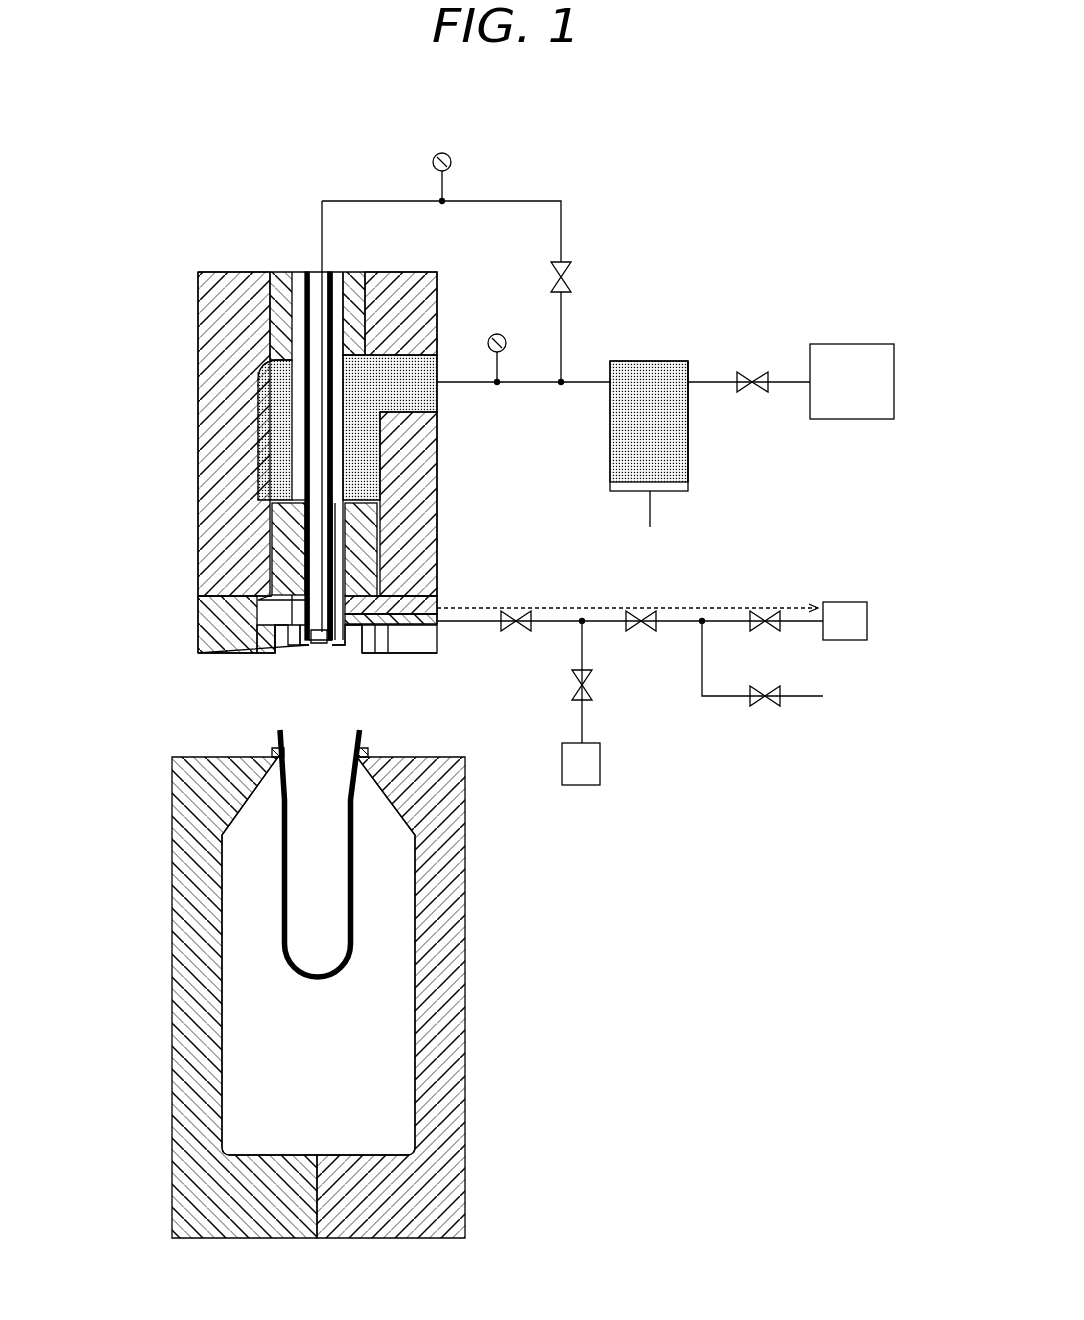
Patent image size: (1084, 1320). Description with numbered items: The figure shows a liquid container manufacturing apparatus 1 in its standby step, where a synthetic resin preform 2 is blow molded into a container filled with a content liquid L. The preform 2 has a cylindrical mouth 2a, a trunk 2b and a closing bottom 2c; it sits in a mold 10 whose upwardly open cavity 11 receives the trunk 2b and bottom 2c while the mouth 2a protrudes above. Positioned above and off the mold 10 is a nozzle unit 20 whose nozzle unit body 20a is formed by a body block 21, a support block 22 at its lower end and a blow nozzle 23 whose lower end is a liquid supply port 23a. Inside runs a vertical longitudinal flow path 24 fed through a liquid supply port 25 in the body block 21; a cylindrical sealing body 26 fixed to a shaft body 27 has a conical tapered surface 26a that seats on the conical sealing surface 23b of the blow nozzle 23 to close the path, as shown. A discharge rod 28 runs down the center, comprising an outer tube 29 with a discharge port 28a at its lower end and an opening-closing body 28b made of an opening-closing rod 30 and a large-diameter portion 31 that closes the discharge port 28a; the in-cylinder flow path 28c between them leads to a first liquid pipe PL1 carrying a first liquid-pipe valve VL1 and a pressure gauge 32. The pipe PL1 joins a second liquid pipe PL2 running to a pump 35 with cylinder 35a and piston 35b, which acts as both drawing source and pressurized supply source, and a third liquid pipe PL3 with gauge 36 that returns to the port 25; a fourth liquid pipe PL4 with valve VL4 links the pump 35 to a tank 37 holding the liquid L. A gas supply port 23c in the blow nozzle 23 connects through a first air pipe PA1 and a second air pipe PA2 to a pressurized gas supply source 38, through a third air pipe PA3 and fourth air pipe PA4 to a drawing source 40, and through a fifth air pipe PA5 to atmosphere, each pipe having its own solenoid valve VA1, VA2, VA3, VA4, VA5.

The liquid container manufacturing apparatus 1 is at (733, 210).
The preform 2 is at (357, 886).
The mouth 2a is at (360, 735).
The trunk 2b is at (357, 855).
The bottom 2c is at (316, 988).
The mold 10 is at (465, 934).
The cavity 11 is at (413, 1050).
The nozzle unit 20 is at (172, 372).
The nozzle unit body 20a is at (198, 409).
The body block 21 is at (230, 455).
The support block 22 is at (225, 637).
The blow nozzle 23 is at (245, 618).
The liquid supply port 23a is at (274, 652).
The sealing surface 23b is at (385, 575).
The gas supply port 23c is at (340, 650).
The longitudinal flow path 24 is at (370, 460).
The liquid supply port 25 is at (375, 402).
The sealing body 26 is at (355, 535).
The tapered surface 26a is at (360, 600).
The shaft body 27 is at (296, 385).
The discharge rod 28 is at (300, 522).
The discharge port 28a is at (300, 650).
The opening-closing body 28b is at (305, 545).
The in-cylinder flow path 28c is at (330, 300).
The outer tube 29 is at (300, 575).
The opening-closing rod 30 is at (310, 590).
The large-diameter portion 31 is at (318, 645).
The first liquid-pipe pressure-gauge 32 is at (442, 153).
The pump 35 is at (692, 440).
The cylinder 35a is at (690, 418).
The piston 35b is at (665, 491).
The third liquid-pipe pressure-gauge 36 is at (497, 333).
The tank 37 is at (845, 344).
The pressurized gas supply source 38 is at (580, 786).
The drawing source 40 is at (848, 602).
The liquid L is at (270, 482).
The first liquid pipe PL1 is at (485, 205).
The second liquid pipe PL2 is at (590, 380).
The third liquid pipe PL3 is at (528, 386).
The fourth liquid pipe PL4 is at (705, 380).
The first liquid-pipe valve VL1 is at (563, 262).
The fourth liquid-pipe valve VL4 is at (765, 392).
The first air pipe PA1 is at (552, 618).
The second air pipe PA2 is at (585, 718).
The third air pipe PA3 is at (678, 623).
The fourth air pipe PA4 is at (718, 618).
The fifth air pipe PA5 is at (705, 700).
The first air-pipe valve VA1 is at (522, 631).
The second air-pipe valve VA2 is at (576, 690).
The third air-pipe valve VA3 is at (645, 631).
The fourth air-pipe valve VA4 is at (770, 631).
The fifth air-pipe valve VA5 is at (760, 688).